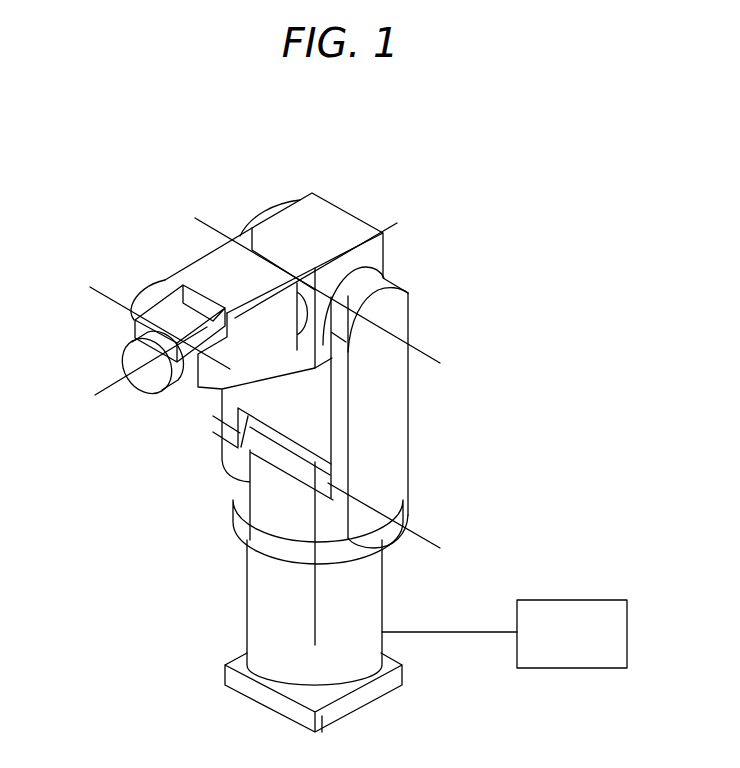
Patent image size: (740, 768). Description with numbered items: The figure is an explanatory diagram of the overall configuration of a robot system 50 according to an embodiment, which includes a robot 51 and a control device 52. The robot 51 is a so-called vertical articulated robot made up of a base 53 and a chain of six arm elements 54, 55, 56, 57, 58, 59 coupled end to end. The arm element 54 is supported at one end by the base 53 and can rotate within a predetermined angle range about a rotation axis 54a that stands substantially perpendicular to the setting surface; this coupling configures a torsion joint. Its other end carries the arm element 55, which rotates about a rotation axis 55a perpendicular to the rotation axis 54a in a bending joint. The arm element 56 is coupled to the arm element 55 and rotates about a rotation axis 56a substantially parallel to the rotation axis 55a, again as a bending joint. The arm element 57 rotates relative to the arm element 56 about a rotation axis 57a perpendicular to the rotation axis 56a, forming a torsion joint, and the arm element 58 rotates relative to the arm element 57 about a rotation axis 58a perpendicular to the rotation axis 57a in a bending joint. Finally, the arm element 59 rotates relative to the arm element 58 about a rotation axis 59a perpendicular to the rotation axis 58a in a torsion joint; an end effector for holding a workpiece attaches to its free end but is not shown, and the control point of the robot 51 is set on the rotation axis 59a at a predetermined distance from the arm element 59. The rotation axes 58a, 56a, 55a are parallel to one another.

The robot system 50 is at (146, 168).
The robot 51 is at (501, 212).
The control device 52 is at (612, 600).
The base 53 is at (370, 607).
The arm element 54 is at (231, 530).
The rotation axis 54a is at (312, 636).
The arm element 55 is at (408, 418).
The rotation axis 55a is at (420, 531).
The arm element 56 is at (300, 204).
The rotation axis 56a is at (424, 346).
The arm element 57 is at (203, 268).
The rotation axis 57a is at (395, 225).
The arm element 58 is at (147, 296).
The rotation axis 58a is at (104, 290).
The arm element 59 is at (155, 388).
The rotation axis 59a is at (110, 383).